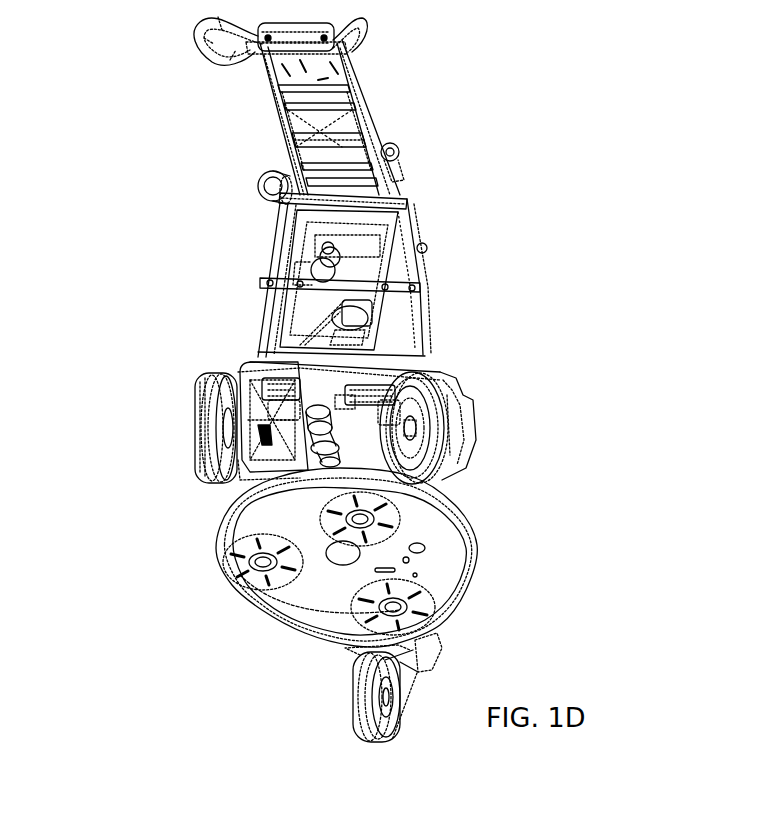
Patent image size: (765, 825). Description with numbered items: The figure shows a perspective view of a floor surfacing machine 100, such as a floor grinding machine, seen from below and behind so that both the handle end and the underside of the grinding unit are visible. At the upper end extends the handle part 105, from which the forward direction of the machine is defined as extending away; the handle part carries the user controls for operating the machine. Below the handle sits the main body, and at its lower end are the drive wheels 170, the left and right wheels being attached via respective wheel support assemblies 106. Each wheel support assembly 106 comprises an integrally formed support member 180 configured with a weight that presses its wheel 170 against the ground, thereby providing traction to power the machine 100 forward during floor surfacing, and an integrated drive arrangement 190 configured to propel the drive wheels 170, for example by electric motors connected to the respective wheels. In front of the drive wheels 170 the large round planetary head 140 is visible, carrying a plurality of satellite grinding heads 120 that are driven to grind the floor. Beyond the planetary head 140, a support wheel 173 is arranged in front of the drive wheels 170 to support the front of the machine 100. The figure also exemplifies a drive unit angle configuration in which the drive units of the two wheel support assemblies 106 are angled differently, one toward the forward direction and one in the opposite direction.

The floor surfacing machine 100 is at (550, 211).
The handle part 105 is at (318, 71).
The wheel support assembly 106 is at (176, 483).
The satellite grinding heads 120 is at (250, 574).
The planetary head 140 is at (435, 575).
The drive wheels 170 is at (202, 416).
The support wheel 173 is at (358, 692).
The support member 180 is at (242, 380).
The drive arrangement 190 is at (283, 385).